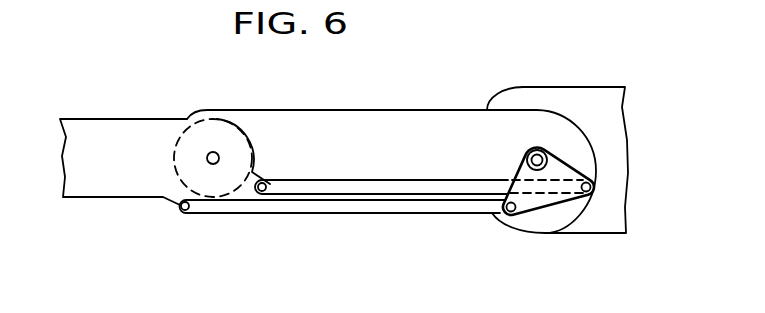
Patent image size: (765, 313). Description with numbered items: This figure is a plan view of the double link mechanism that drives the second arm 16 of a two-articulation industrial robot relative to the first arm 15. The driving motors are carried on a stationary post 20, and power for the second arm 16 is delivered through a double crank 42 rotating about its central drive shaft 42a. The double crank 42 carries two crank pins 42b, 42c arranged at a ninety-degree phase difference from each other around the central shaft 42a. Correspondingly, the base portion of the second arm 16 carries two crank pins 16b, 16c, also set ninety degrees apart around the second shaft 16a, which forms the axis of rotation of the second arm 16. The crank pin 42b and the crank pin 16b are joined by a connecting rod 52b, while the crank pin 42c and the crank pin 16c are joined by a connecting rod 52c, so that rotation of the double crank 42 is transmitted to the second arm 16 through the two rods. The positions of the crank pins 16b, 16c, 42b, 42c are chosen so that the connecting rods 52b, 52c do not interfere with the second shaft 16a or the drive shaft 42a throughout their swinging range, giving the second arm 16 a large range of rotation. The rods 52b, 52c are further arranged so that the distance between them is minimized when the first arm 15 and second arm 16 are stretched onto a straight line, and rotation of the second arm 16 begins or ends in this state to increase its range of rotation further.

The first arm 15 is at (380, 118).
The second arm 16 is at (107, 125).
The second shaft 16a is at (216, 164).
The crank pin 16b is at (270, 195).
The crank pin 16c is at (183, 214).
The stationary post 20 is at (552, 90).
The double crank 42 is at (548, 212).
The central shaft 42a is at (547, 157).
The crank pin 42b is at (593, 197).
The crank pin 42c is at (510, 216).
The connecting rod 52b is at (417, 194).
The connecting rod 52c is at (373, 207).